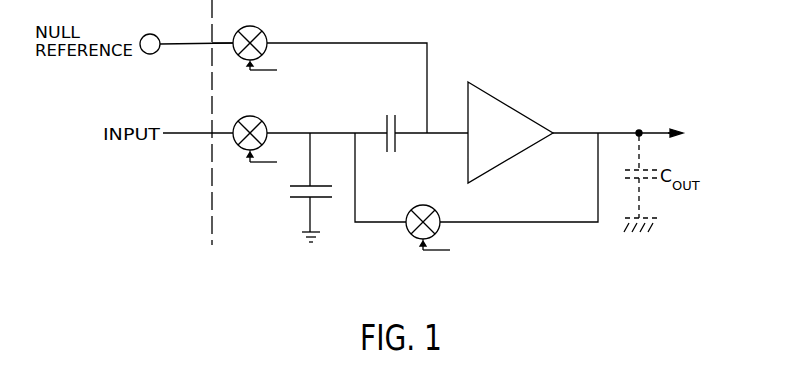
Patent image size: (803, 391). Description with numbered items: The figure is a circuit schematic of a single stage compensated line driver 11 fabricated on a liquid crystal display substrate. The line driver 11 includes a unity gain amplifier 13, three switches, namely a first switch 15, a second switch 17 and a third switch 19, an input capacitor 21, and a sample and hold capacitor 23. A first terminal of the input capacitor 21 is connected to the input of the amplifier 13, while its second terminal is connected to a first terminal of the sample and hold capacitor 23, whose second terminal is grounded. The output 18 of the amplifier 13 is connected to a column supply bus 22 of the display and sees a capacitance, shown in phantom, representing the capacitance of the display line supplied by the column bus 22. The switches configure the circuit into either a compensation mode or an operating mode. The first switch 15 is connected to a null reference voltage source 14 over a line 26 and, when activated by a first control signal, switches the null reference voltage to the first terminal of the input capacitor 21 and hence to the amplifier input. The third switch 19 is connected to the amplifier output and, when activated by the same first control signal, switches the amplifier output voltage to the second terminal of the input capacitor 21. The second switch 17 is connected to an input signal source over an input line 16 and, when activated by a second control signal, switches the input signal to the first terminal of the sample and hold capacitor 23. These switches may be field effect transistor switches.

The single stage compensated line driver 11 is at (490, 244).
The unity gain amplifier 13 is at (530, 113).
The null reference voltage source 14 is at (157, 33).
The first switch 15 is at (262, 19).
The input line 16 is at (203, 132).
The second switch 17 is at (262, 120).
The output 18 is at (608, 132).
The third switch 19 is at (428, 205).
The input capacitor 21 is at (386, 121).
The column supply bus 22 is at (655, 131).
The sample and hold capacitor 23 is at (298, 201).
The line 26 is at (217, 44).